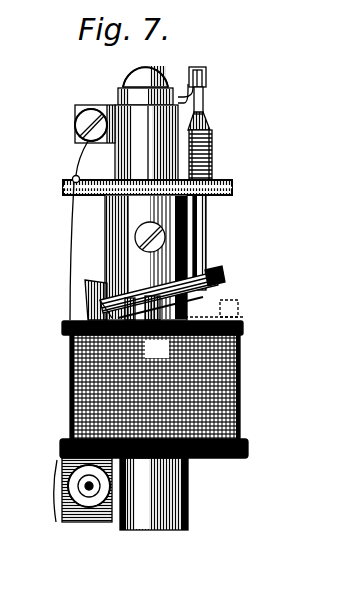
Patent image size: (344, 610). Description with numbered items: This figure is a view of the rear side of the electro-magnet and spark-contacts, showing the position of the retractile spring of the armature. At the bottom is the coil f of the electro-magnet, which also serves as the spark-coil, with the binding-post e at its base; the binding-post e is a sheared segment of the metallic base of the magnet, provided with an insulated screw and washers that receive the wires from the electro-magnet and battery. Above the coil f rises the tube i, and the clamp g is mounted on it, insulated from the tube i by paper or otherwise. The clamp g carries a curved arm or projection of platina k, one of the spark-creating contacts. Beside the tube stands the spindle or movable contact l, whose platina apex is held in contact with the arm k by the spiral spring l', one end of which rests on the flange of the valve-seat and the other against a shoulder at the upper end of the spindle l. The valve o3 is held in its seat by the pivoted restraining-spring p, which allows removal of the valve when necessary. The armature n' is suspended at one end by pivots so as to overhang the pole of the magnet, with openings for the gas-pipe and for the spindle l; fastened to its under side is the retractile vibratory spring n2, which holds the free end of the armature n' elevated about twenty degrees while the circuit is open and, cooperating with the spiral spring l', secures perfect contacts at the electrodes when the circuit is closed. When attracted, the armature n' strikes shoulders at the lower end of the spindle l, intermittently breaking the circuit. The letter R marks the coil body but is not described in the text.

The clamp g is at (106, 106).
The tube i is at (146, 142).
The curved arm or projection of platina k is at (204, 70).
The spindle or movable contact l is at (208, 188).
The spiral spring l' is at (212, 155).
The valve o3 is at (146, 257).
The pivoted restraining-spring p is at (108, 243).
The armature n' is at (174, 293).
The retractile vibratory spring n2 is at (217, 299).
The coil R is at (157, 350).
The coil of the electro-magnet f is at (64, 392).
The binding-post e is at (83, 493).